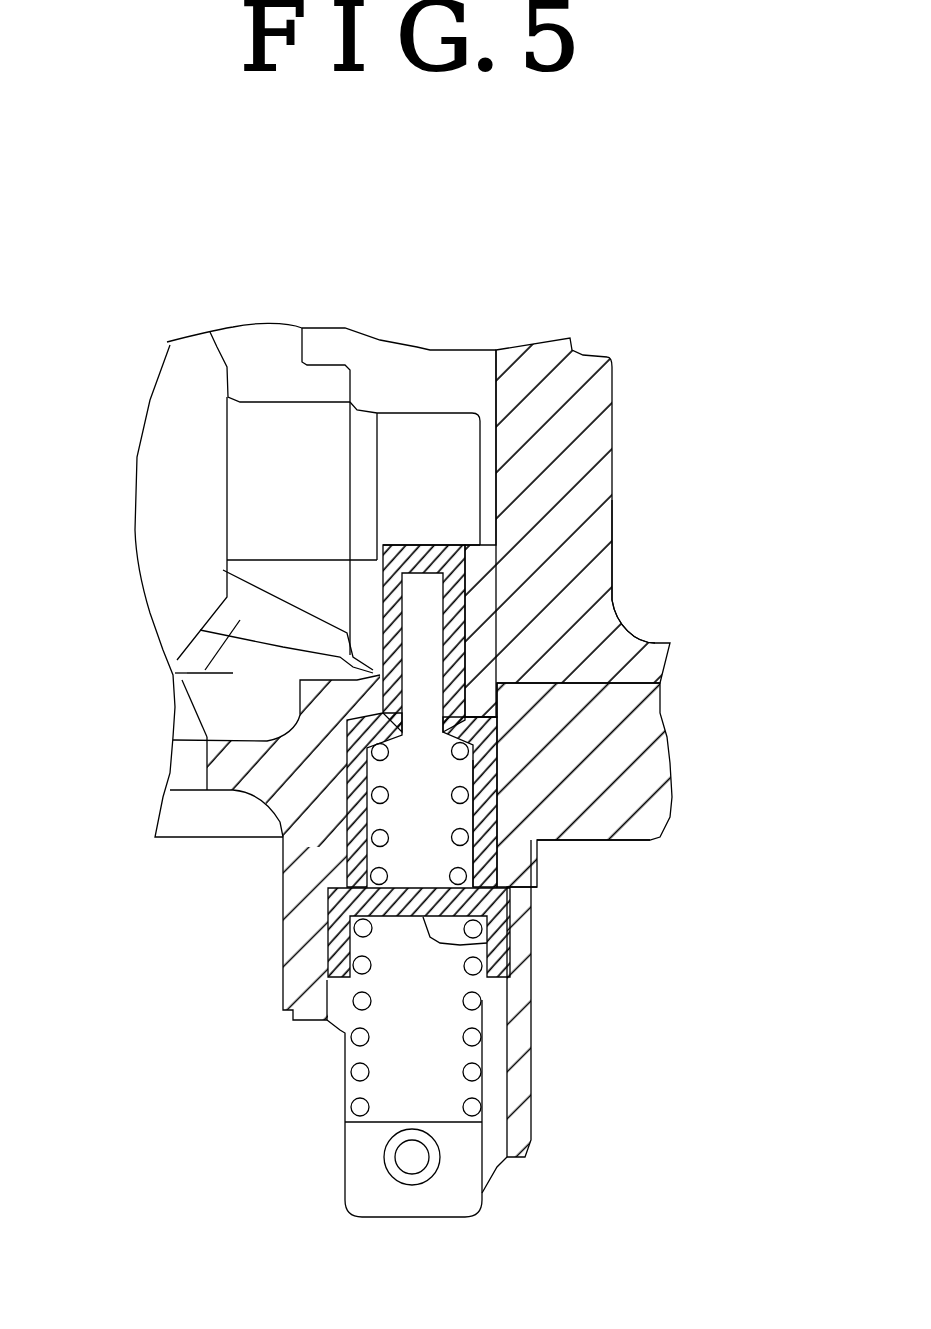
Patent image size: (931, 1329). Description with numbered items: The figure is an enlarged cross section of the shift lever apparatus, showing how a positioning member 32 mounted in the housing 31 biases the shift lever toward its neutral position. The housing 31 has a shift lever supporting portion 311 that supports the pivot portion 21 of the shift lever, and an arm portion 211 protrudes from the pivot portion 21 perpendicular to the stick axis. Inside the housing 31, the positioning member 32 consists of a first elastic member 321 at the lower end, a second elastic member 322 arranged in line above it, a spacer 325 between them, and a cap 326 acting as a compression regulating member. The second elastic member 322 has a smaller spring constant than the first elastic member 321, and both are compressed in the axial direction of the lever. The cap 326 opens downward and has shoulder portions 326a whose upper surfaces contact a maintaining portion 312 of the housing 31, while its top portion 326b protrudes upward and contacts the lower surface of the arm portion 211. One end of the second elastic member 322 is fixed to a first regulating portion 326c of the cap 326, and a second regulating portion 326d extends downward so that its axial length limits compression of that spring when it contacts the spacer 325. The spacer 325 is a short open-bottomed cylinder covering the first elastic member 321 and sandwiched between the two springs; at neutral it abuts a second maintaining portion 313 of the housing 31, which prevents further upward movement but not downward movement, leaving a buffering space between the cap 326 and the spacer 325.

The pivot portion 21 is at (185, 377).
The arm portion 211 is at (423, 413).
The housing 31 is at (598, 405).
The positioning member 32 is at (600, 455).
The cap 326 is at (490, 577).
The shoulder portion 326a is at (500, 698).
The top portion 326b is at (590, 560).
The first regulating portion 326c is at (490, 773).
The second regulating portion 326d is at (607, 842).
The maintaining portion 312 is at (612, 605).
The shift lever supporting portion 311 is at (172, 682).
The second maintaining portion 313 is at (347, 887).
The second elastic member 322 is at (340, 858).
The spacer 325 is at (510, 942).
The first elastic member 321 is at (287, 1005).